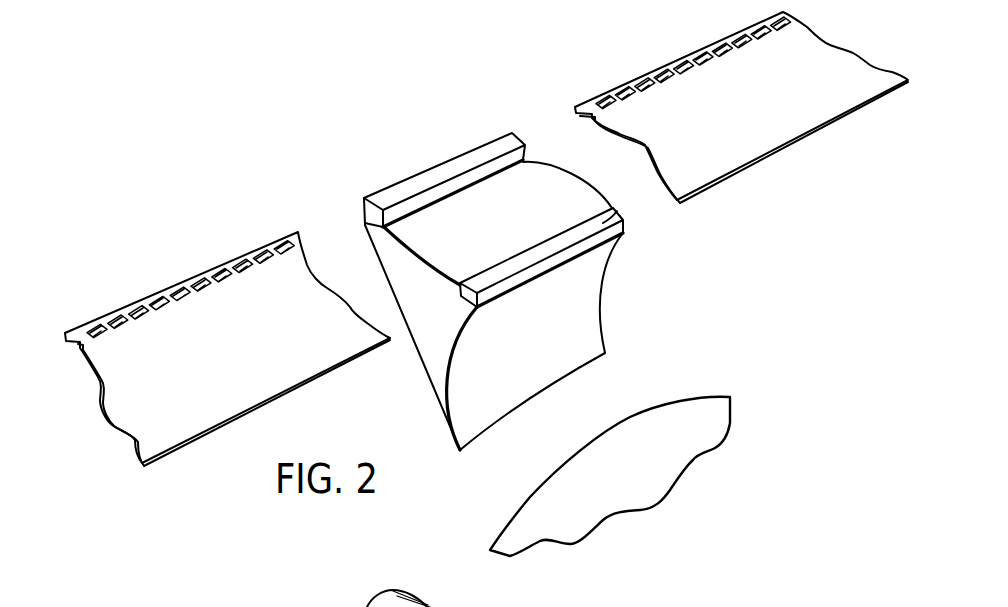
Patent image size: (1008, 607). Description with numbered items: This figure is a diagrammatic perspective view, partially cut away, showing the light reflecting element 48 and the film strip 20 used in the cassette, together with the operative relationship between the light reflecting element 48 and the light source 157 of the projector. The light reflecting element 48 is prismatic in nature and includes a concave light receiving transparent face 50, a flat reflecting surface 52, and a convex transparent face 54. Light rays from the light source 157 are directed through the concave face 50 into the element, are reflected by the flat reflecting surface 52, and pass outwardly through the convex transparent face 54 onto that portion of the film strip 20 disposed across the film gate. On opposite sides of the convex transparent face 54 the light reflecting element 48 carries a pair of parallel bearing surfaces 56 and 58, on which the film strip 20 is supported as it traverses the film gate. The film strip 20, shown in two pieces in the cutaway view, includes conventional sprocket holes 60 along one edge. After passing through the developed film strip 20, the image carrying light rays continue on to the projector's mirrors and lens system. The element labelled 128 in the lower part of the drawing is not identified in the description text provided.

The film strip 20 is at (295, 270).
The sprocket holes 60 is at (233, 267).
The light reflecting element 48 is at (526, 274).
The concave light receiving transparent face 50 is at (570, 321).
The flat reflecting surface 52 is at (422, 367).
The convex transparent face 54 is at (525, 183).
The bearing surface 56 is at (425, 175).
The bearing surface 58 is at (622, 212).
The light source 157 is at (713, 400).
The roller 128 is at (397, 604).